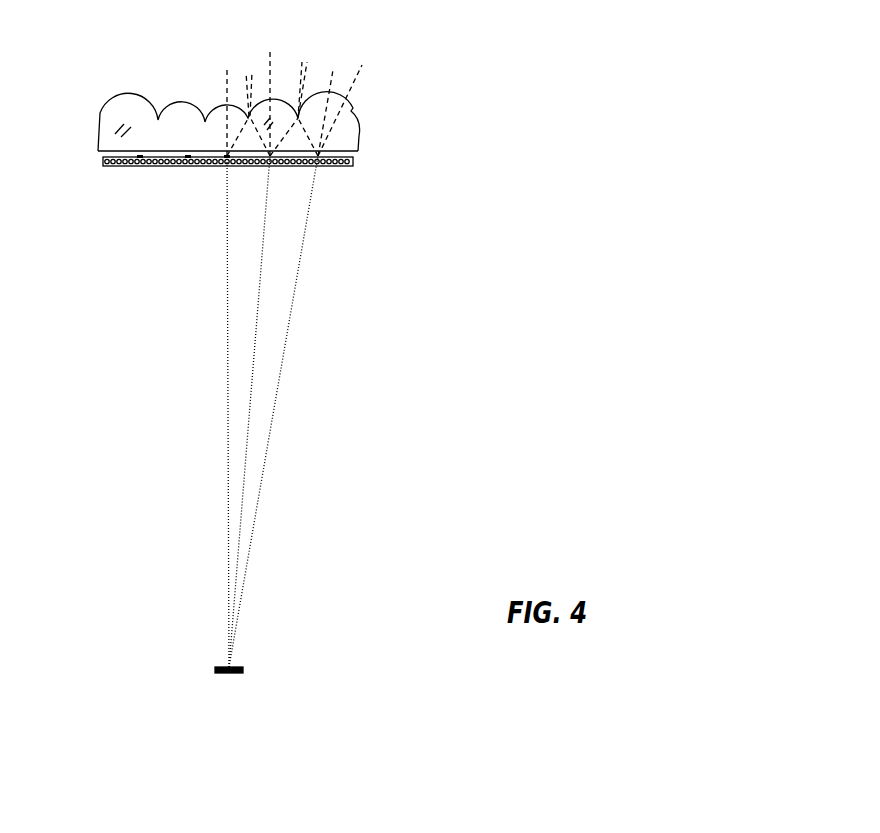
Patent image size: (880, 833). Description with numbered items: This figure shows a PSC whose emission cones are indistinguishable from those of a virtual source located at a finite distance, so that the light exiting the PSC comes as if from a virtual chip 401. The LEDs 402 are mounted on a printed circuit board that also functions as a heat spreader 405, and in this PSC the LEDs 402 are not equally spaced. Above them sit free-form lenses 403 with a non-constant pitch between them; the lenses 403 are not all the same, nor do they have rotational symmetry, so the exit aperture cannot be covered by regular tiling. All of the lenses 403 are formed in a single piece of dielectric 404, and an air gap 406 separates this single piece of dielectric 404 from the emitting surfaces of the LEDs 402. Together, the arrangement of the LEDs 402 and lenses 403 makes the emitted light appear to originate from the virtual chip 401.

The virtual chip 401 is at (222, 658).
The LEDs 402 is at (226, 160).
The lenses 403 is at (334, 68).
The single piece of dielectric 404 is at (370, 125).
The heat spreader 405 is at (362, 161).
The air gap 406 is at (98, 159).